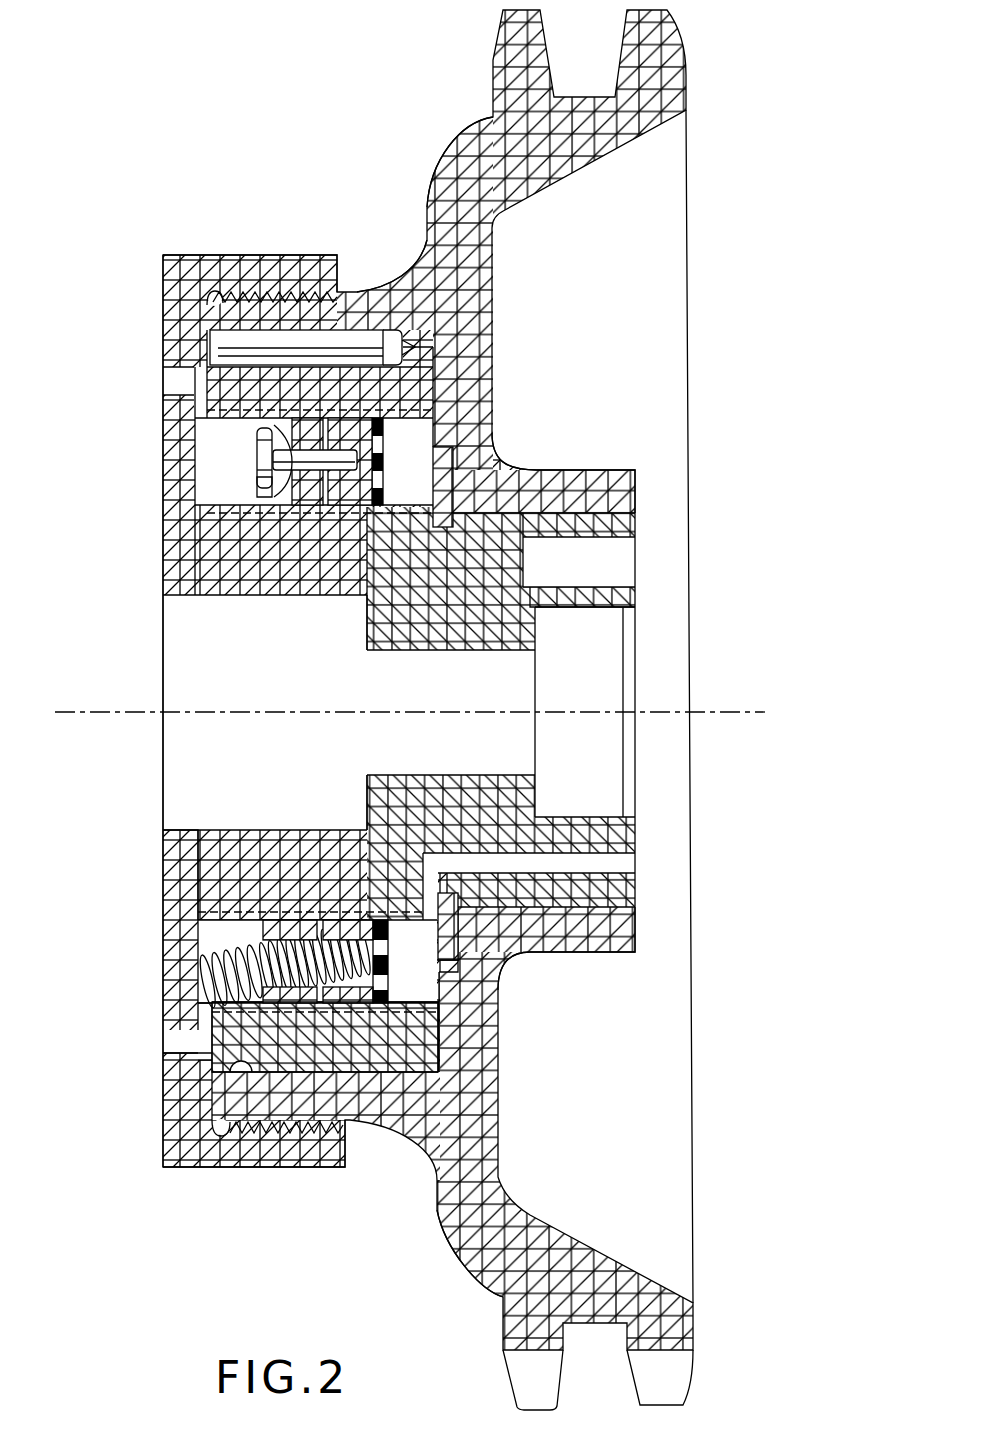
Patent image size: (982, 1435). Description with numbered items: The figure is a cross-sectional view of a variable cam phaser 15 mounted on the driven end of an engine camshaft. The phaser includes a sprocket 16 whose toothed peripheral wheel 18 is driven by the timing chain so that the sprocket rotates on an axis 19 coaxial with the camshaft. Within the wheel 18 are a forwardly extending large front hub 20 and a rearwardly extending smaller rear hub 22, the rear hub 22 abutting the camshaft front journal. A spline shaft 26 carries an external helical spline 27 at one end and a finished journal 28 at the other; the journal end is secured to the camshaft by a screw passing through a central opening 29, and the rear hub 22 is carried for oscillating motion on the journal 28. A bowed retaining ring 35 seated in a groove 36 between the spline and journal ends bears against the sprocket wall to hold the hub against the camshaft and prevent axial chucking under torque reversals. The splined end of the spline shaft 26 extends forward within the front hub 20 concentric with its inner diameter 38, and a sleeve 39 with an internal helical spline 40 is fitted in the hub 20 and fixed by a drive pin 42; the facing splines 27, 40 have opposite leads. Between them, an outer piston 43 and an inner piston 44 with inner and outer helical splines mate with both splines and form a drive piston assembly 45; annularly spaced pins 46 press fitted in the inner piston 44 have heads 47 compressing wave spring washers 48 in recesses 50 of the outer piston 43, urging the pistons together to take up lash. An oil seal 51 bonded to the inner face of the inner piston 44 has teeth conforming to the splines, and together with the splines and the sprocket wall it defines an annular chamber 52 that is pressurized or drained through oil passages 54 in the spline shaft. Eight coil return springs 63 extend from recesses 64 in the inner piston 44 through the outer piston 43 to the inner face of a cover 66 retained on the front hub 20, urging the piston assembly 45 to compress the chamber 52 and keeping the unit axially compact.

The variable cam phaser 15 is at (414, 1160).
The sprocket 16 is at (463, 162).
The wheel 18 is at (648, 95).
The axis 19 is at (707, 718).
The front hub 20 is at (393, 300).
The rear hub 22 is at (593, 933).
The spline shaft 26 is at (218, 826).
The external helical spline 27 is at (245, 475).
The journal 28 is at (603, 487).
The central opening 29 is at (603, 677).
The bowed retaining ring 35 is at (460, 963).
The groove 36 is at (457, 945).
The inner diameter 38 is at (207, 1077).
The sleeve 39 is at (300, 1110).
The internal helical spline 40 is at (207, 1000).
The drive pin 42 is at (293, 340).
The outer piston 43 is at (300, 512).
The inner piston 44 is at (349, 510).
The drive piston assembly 45 is at (226, 452).
The pins 46 is at (253, 465).
The heads 47 is at (253, 433).
The wave spring washers 48 is at (246, 396).
The recesses 50 is at (262, 500).
The oil seal 51 is at (380, 437).
The annular chamber 52 is at (413, 487).
The oil passages 54 is at (590, 858).
The coil return springs 63 is at (207, 980).
The recesses 64 is at (357, 977).
The cover 66 is at (157, 912).